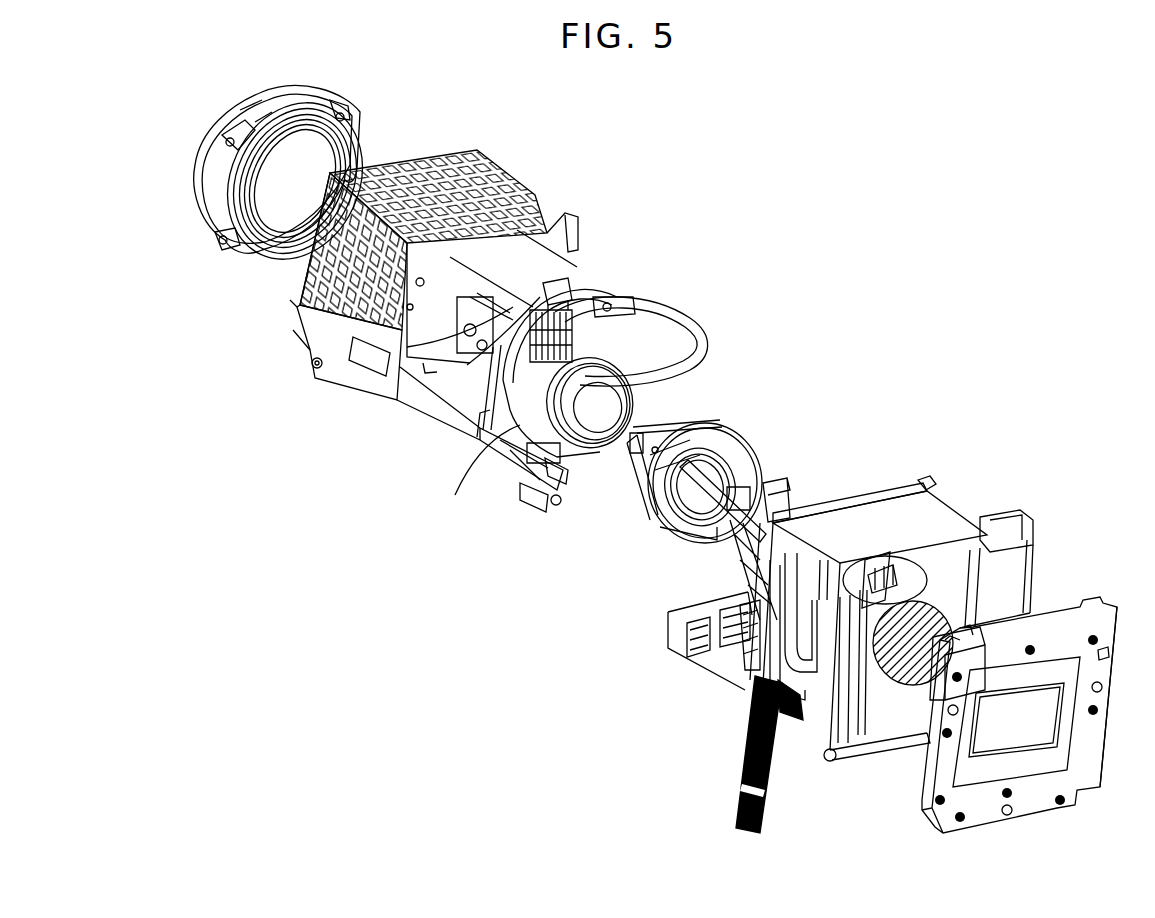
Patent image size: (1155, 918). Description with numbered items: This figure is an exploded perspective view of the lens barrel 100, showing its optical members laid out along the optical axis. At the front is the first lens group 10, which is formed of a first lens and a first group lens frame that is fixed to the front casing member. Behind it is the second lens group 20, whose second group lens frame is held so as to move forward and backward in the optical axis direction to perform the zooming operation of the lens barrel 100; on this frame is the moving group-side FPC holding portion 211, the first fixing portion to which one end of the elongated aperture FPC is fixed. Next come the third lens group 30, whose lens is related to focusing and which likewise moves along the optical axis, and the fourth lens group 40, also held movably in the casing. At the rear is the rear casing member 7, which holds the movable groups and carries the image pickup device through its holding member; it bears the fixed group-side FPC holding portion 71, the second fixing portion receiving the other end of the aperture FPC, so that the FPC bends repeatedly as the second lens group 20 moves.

The lens barrel 100 is at (1087, 197).
The first lens group 10 is at (197, 175).
The second lens group 20 is at (517, 432).
The moving group-side FPC holding portion 211 is at (565, 270).
The third lens group 30 is at (667, 530).
The fourth lens group 40 is at (762, 510).
The rear casing member 7 is at (940, 510).
The fixed group-side FPC holding portion 71 is at (857, 560).